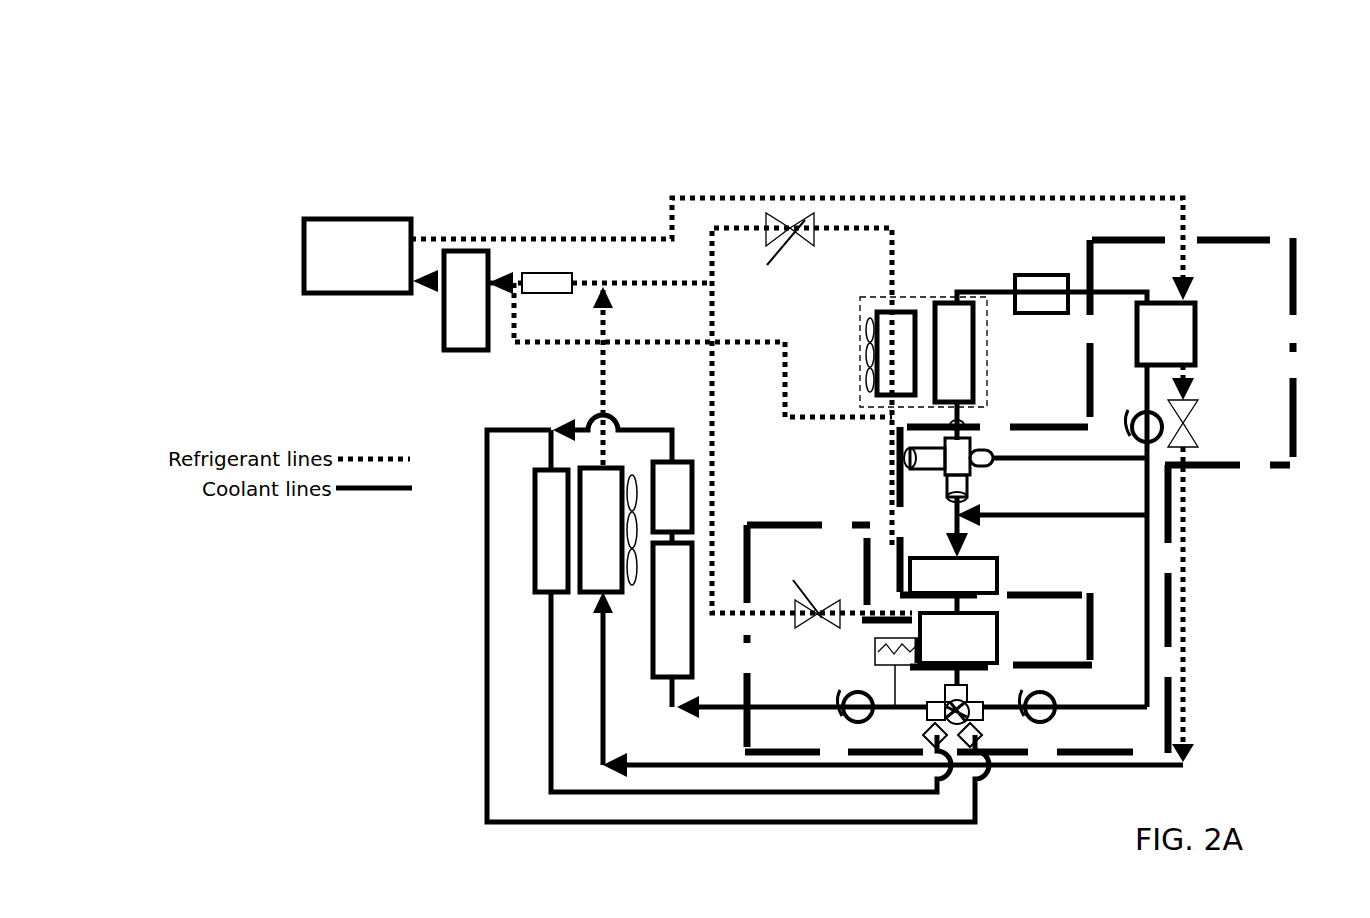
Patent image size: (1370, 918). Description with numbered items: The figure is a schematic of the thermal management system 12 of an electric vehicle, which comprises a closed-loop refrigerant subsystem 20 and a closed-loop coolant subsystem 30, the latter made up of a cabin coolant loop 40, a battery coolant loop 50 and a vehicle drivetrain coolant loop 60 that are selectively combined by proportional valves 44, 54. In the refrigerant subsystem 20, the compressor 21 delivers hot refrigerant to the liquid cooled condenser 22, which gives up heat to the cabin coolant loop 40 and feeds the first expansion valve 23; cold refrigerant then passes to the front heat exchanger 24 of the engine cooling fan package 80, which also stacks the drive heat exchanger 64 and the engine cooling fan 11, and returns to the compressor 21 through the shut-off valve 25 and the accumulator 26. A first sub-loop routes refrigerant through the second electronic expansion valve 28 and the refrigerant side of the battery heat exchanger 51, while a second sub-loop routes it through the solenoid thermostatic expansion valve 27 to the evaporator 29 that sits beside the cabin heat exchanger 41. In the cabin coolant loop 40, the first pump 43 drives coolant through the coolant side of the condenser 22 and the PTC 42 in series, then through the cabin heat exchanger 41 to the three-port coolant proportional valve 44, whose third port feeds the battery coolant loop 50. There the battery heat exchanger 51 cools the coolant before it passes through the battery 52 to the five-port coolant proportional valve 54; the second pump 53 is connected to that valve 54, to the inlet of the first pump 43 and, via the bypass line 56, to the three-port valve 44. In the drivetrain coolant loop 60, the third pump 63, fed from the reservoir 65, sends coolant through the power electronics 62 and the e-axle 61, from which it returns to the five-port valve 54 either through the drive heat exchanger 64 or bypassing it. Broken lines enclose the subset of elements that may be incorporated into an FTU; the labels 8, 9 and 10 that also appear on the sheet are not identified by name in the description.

The control line 8 is at (718, 197).
The first compartment 9 is at (762, 477).
The second compartment 10 is at (840, 326).
The engine cooling fan 11 is at (632, 585).
The thermal management system 12 is at (374, 141).
The refrigerant subsystem 20 is at (850, 194).
The compressor 21 is at (370, 272).
The liquid cooled condenser 22 is at (1196, 330).
The first expansion valve 23 is at (1187, 420).
The front heat exchanger 24 is at (583, 593).
The shut-off valve 25 is at (547, 273).
The accumulator 26 is at (443, 323).
The solenoid thermostatic expansion valve 27 is at (778, 265).
The second electronic expansion valve 28 is at (804, 582).
The evaporator 29 is at (928, 288).
The coolant subsystem 30 is at (1160, 628).
The cabin coolant loop 40 is at (992, 252).
The cabin heat exchanger 41 is at (975, 345).
The PTC 42 is at (1040, 275).
The first pump 43 is at (1130, 534).
The three-port coolant proportional valve 44 is at (972, 478).
The battery coolant loop 50 is at (1115, 602).
The battery heat exchanger 51 is at (998, 585).
The battery 52 is at (998, 655).
The second pump 53 is at (1055, 700).
The five-port coolant proportional valve 54 is at (935, 720).
The bypass line 56 is at (1140, 515).
The vehicle drivetrain coolant loop 60 is at (477, 745).
The e-axle 61 is at (681, 462).
The vehicle power electronics 62 is at (653, 633).
The third pump 63 is at (843, 700).
The drive heat exchanger 64 is at (535, 567).
The reservoir 65 is at (875, 650).
The engine cooling fan package 80 is at (517, 530).